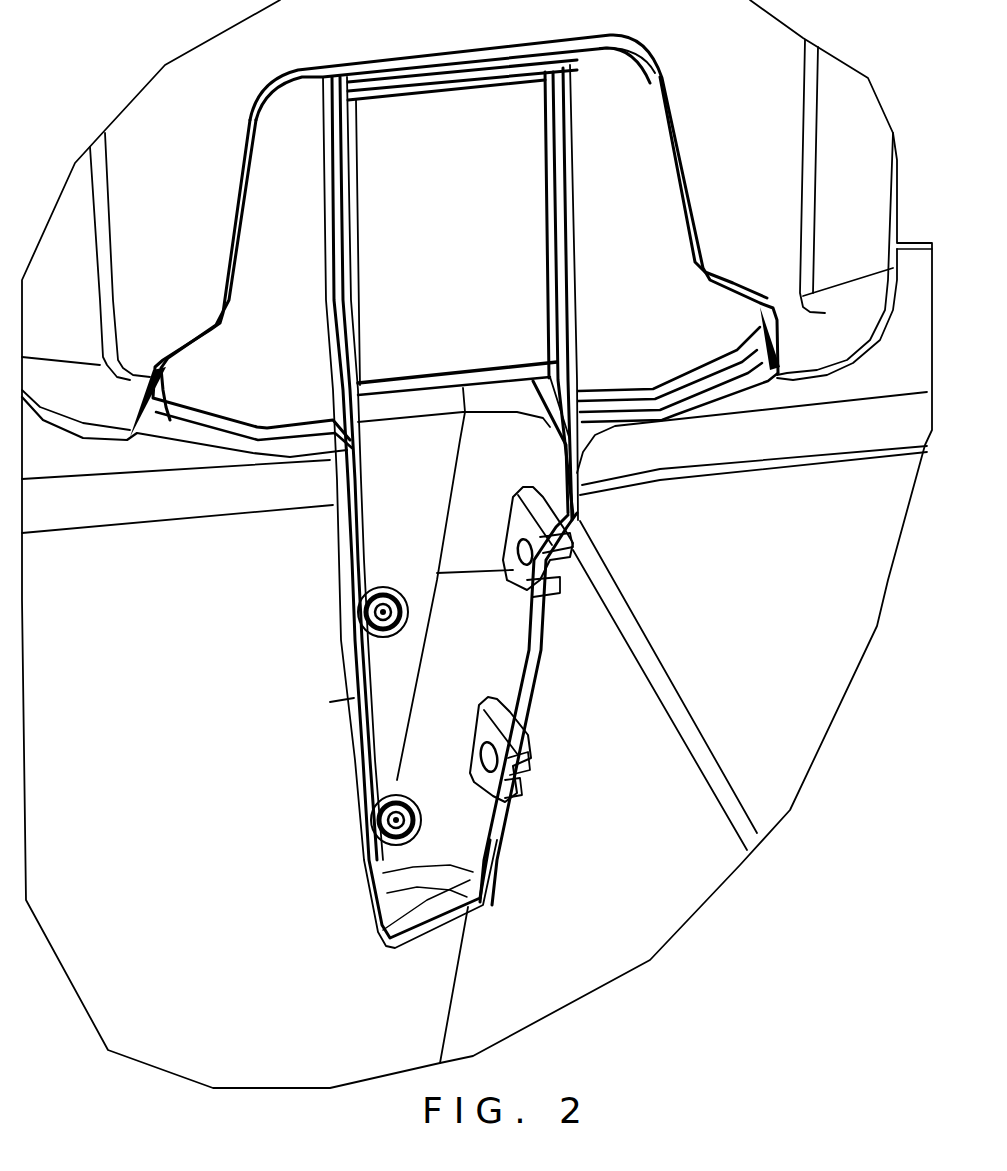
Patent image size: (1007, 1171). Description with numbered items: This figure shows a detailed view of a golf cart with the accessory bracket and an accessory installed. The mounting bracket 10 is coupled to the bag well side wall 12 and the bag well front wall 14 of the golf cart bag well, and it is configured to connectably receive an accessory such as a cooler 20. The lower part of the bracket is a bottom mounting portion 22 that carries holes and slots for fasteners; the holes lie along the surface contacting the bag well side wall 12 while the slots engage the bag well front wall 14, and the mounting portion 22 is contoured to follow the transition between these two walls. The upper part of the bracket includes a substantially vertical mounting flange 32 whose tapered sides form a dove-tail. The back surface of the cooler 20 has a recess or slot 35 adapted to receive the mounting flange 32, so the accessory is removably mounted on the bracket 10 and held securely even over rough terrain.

The mounting bracket 10 is at (278, 557).
The bag well side wall 12 is at (235, 853).
The bag well front wall 14 is at (642, 779).
The cooler 20 is at (880, 178).
The bottom mounting portion 22 is at (348, 696).
The vertical mounting flange 32 is at (300, 262).
The recess or slot 35 is at (637, 114).